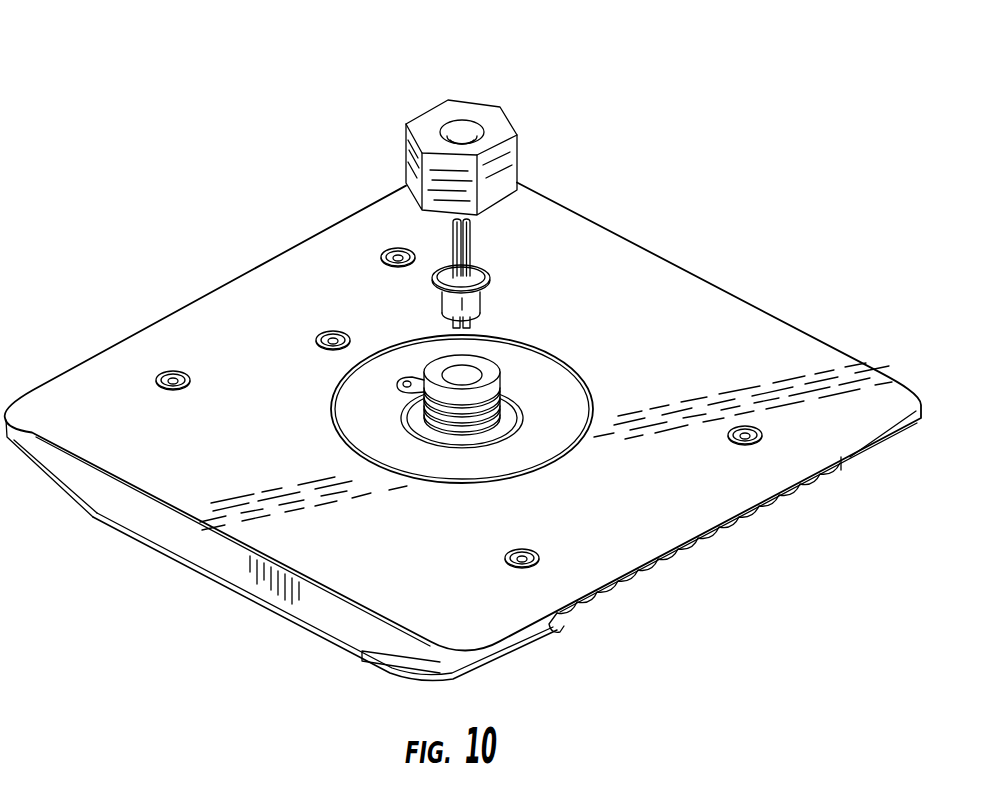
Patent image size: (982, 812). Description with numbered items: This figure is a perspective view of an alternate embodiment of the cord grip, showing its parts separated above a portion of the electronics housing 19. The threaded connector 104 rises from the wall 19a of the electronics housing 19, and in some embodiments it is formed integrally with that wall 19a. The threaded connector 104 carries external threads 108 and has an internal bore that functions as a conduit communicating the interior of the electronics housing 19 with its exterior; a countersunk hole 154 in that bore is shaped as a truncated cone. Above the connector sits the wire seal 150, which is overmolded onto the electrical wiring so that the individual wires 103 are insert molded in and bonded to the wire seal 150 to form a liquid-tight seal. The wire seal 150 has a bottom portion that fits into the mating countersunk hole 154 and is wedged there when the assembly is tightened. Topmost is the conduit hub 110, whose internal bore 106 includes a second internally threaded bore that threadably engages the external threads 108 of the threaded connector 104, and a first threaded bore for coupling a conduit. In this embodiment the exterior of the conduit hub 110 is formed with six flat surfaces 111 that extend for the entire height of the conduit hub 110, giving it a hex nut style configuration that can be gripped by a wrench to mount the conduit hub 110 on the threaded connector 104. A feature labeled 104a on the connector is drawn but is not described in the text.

The electronics housing 19 is at (752, 296).
The wall of the electronics housing 19a is at (798, 362).
The conduit hub 110 is at (422, 106).
The flat surfaces 111 is at (460, 100).
The countersunk hole 154 is at (468, 123).
The internal bore 106 is at (480, 146).
The wires 103 is at (452, 238).
The wire seal 150 is at (487, 300).
The threaded connector 104 is at (512, 377).
The locating tab 104a is at (437, 368).
The external threads 108 is at (437, 413).